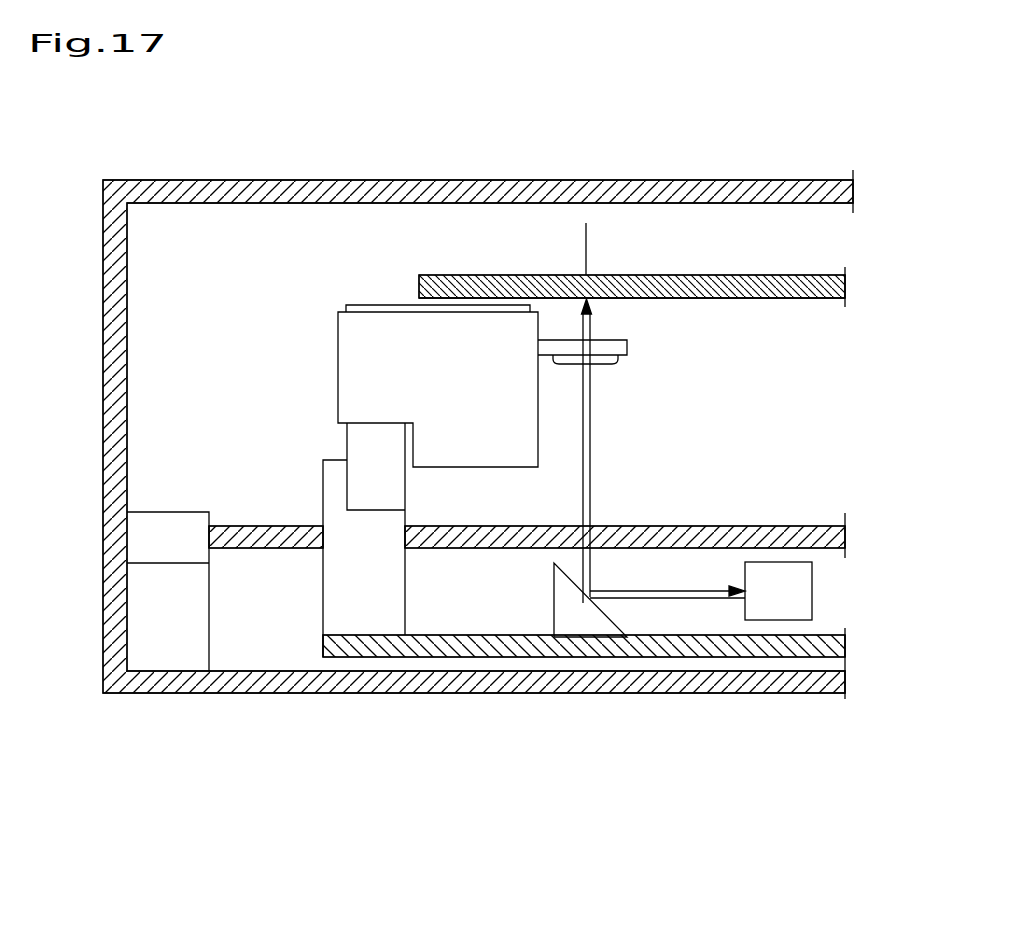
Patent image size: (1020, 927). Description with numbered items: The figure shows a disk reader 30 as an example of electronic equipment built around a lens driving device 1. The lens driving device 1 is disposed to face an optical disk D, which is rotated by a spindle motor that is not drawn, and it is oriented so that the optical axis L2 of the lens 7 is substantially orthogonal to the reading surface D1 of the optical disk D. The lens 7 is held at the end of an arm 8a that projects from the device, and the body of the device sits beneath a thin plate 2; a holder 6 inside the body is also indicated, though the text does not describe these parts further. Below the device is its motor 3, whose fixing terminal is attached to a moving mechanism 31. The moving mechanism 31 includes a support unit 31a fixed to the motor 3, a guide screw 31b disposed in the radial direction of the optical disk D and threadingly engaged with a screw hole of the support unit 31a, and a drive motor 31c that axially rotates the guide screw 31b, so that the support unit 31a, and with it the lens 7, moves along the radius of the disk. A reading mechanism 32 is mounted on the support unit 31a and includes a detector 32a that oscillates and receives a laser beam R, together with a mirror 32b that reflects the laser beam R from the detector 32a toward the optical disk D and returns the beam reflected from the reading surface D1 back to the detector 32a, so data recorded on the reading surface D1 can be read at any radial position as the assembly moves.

The disk reader 30 is at (770, 162).
The optical disk D is at (805, 273).
The reading surface D1 is at (776, 299).
The optical axis L2 is at (588, 263).
The cover plate 2 is at (355, 305).
The lens driving device 1 is at (330, 338).
The lens holder 6 is at (362, 389).
The arm 8a is at (625, 343).
The lens 7 is at (612, 363).
The motor 3 is at (358, 445).
The moving mechanism 31 is at (229, 494).
The drive motor 31c is at (150, 542).
The guide screw 31b is at (280, 548).
The support unit 31a is at (445, 637).
The mirror 32b is at (574, 618).
The laser beam R is at (627, 592).
The detector 32a is at (798, 590).
The reading mechanism 32 is at (701, 565).